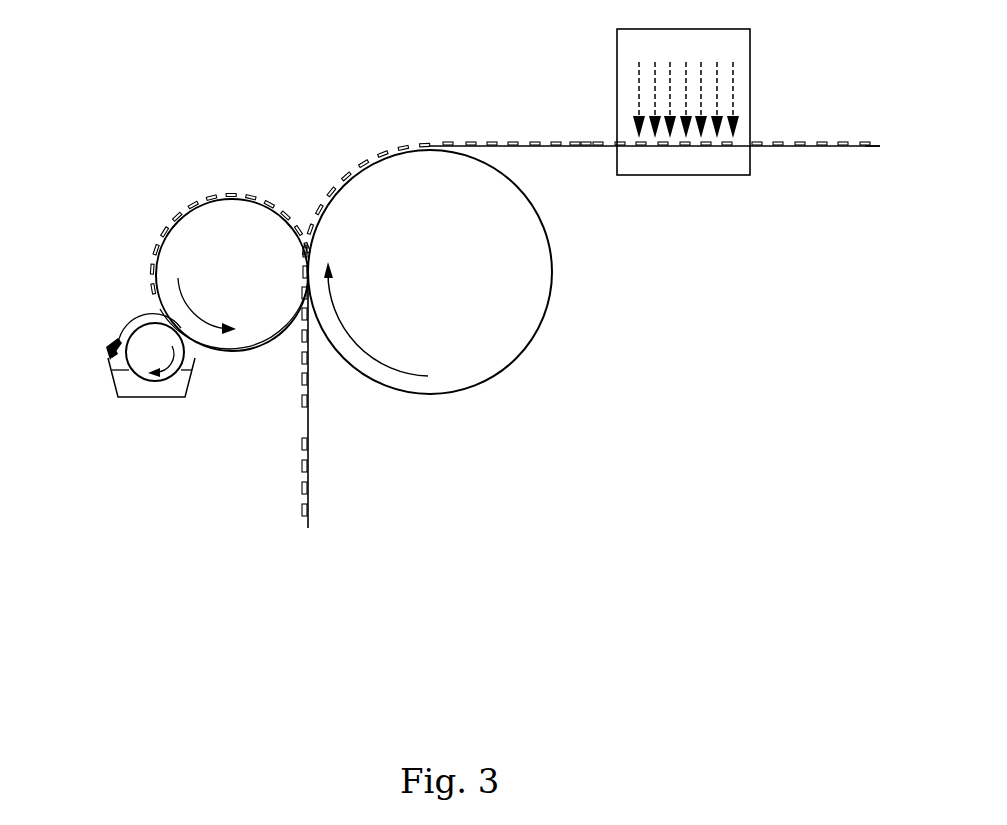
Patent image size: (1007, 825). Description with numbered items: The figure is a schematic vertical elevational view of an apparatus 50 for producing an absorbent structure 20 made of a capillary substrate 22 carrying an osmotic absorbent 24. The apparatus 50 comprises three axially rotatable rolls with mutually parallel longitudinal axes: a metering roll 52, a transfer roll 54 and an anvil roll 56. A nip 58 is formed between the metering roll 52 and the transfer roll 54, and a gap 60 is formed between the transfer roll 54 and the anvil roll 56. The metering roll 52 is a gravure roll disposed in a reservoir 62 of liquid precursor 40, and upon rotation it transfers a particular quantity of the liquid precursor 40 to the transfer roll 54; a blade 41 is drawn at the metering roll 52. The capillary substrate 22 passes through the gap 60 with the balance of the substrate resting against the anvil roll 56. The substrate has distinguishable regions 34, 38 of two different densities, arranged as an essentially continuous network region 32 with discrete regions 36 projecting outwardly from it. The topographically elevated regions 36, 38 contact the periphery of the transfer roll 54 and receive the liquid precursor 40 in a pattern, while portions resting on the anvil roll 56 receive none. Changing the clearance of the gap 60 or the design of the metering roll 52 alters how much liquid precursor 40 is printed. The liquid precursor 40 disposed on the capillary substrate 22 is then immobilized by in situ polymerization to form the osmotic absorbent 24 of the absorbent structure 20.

The absorbent structure 20 is at (834, 172).
The capillary substrate 22 is at (311, 465).
The osmotic absorbent 24 is at (783, 142).
The essentially continuous network region 32 is at (304, 400).
The region of first density 34 is at (304, 486).
The discrete regions 36 is at (304, 440).
The region of second density 38 is at (578, 142).
The liquid precursor 40 is at (113, 348).
The doctor blade 41 is at (117, 343).
The apparatus 50 is at (452, 484).
The metering roll 52 is at (152, 336).
The transfer roll 54 is at (202, 232).
The anvil roll 56 is at (445, 382).
The nip 58 is at (158, 318).
The gap 60 is at (305, 262).
The reservoir 62 is at (122, 400).